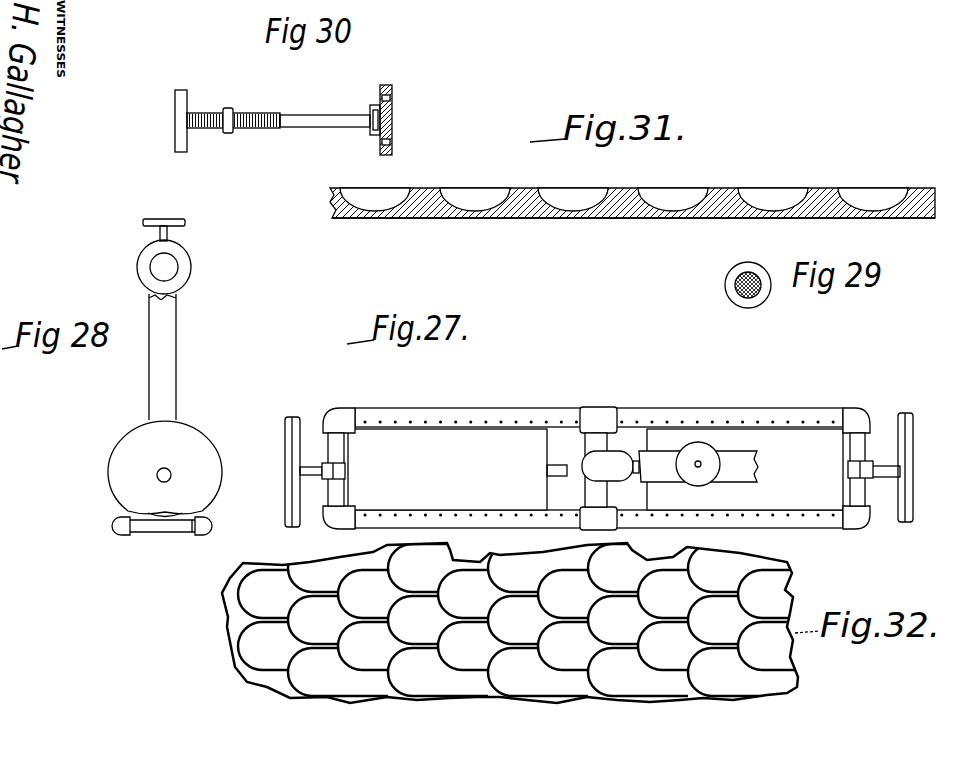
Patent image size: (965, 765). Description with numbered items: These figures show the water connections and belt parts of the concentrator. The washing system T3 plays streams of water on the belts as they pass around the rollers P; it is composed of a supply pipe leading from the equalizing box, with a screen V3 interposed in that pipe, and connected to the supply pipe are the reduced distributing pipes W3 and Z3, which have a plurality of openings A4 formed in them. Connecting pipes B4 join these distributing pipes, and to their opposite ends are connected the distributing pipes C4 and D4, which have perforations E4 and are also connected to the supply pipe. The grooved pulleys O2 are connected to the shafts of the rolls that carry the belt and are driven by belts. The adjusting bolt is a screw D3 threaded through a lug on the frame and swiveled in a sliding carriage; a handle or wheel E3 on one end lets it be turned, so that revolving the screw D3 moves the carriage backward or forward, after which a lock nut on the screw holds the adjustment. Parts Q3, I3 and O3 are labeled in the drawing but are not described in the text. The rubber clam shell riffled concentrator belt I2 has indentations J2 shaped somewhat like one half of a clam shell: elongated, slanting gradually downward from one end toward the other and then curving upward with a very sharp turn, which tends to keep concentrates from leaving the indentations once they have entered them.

In FIG. 30, the screw D3 is at (272, 114).
In FIG. 30, the handle or wheel E3 is at (174, 137).
In FIG. 30, the nut Q3 is at (228, 131).
In FIG. 30, the flanged block I3 is at (318, 163).
In FIG. 31, the indentations J2 is at (876, 190).
In FIG. 32, the indentations J2 is at (417, 673).
In FIG. 31, the concentrator belt I2 is at (911, 213).
In FIG. 32, the concentrator belt I2 is at (801, 655).
In FIG. 29, the screen V3 is at (726, 285).
In FIG. 28, the washing system T3 is at (184, 319).
In FIG. 27, the washing system T3 is at (745, 440).
In FIG. 28, the shaft O3 is at (165, 344).
In FIG. 27, the shaft O3 is at (662, 479).
In FIG. 28, the grooved pulleys O2 is at (216, 456).
In FIG. 27, the grooved pulleys O2 is at (301, 415).
In FIG. 28, the rollers P is at (165, 517).
In FIG. 28, the openings A4 is at (112, 527).
In FIG. 27, the openings A4 is at (415, 426).
In FIG. 28, the connecting pipes B4 is at (186, 532).
In FIG. 27, the connecting pipes B4 is at (871, 430).
In FIG. 28, the distributing pipe D4 is at (212, 528).
In FIG. 27, the distributing pipe D4 is at (482, 529).
In FIG. 27, the reduced distributing pipe Z3 is at (520, 420).
In FIG. 27, the distributing pipe C4 is at (733, 520).
In FIG. 27, the reduced distributing pipe W3 is at (742, 421).
In FIG. 27, the perforations E4 is at (819, 540).